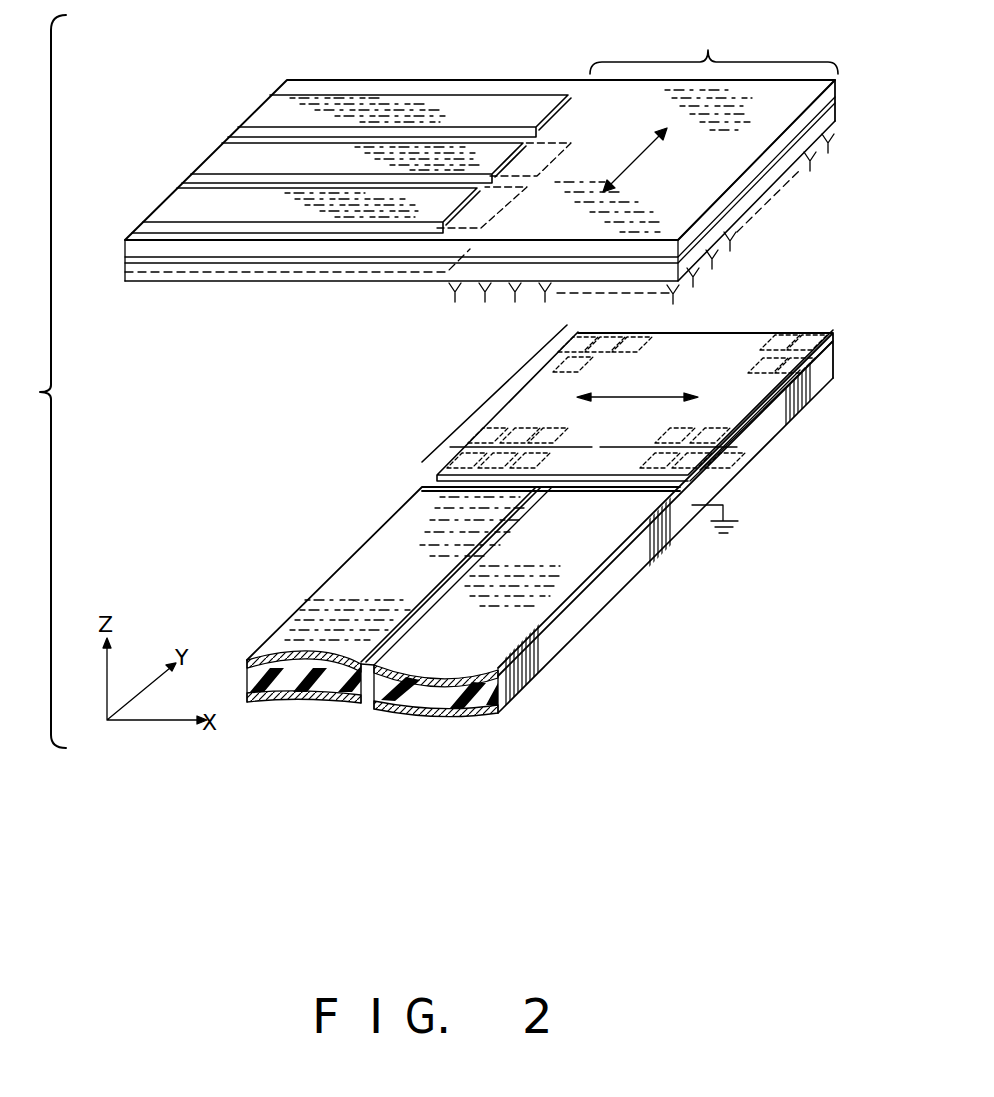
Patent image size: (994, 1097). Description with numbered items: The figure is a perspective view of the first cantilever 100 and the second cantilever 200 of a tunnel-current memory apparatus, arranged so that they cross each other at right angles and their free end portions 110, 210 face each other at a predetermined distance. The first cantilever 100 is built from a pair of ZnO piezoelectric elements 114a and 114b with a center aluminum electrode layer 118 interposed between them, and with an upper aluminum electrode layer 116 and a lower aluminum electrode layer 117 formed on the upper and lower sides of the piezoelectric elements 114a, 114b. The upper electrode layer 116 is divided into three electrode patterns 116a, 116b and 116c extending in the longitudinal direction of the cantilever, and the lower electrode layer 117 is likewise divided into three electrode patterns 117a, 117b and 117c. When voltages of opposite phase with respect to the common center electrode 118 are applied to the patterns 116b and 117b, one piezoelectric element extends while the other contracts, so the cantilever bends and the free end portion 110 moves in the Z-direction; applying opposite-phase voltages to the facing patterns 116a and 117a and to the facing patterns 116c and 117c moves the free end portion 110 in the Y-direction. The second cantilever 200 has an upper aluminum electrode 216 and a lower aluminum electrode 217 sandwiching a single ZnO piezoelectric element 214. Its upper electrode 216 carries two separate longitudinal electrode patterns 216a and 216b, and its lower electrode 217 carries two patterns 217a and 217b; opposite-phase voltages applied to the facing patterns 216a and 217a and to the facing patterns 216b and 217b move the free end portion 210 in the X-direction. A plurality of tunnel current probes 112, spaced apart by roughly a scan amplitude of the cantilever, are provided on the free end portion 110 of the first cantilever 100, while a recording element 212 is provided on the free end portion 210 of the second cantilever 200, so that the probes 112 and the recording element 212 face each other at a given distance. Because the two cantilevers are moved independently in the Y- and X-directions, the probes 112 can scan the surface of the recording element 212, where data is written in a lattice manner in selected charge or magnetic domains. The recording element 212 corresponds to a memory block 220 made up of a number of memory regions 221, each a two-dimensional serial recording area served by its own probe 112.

The first cantilever 100 is at (430, 80).
The free end portion 110 is at (714, 127).
The tunnel current probes 112 is at (832, 146).
The piezoelectric element 114a is at (227, 254).
The piezoelectric element 114b is at (157, 276).
The upper aluminum electrode layer 116 is at (329, 141).
The electrode pattern 116a is at (167, 200).
The electrode pattern 116b is at (205, 155).
The electrode pattern 116c is at (270, 102).
The lower aluminum electrode layer 117 is at (396, 236).
The electrode pattern 117a is at (392, 276).
The electrode pattern 117b is at (490, 231).
The electrode pattern 117c is at (558, 163).
The center aluminum electrode layer 118 is at (125, 263).
The second cantilever 200 is at (358, 552).
The free end portion 210 is at (601, 403).
The recording element 212 is at (752, 408).
The piezoelectric element 214 is at (568, 647).
The upper aluminum electrode 216 is at (458, 568).
The electrode pattern 216a is at (277, 634).
The electrode pattern 216b is at (600, 548).
The lower aluminum electrode 217 is at (388, 732).
The electrode pattern 217a is at (305, 703).
The electrode pattern 217b is at (450, 724).
The memory block 220 is at (727, 460).
The memory regions 221 is at (430, 466).